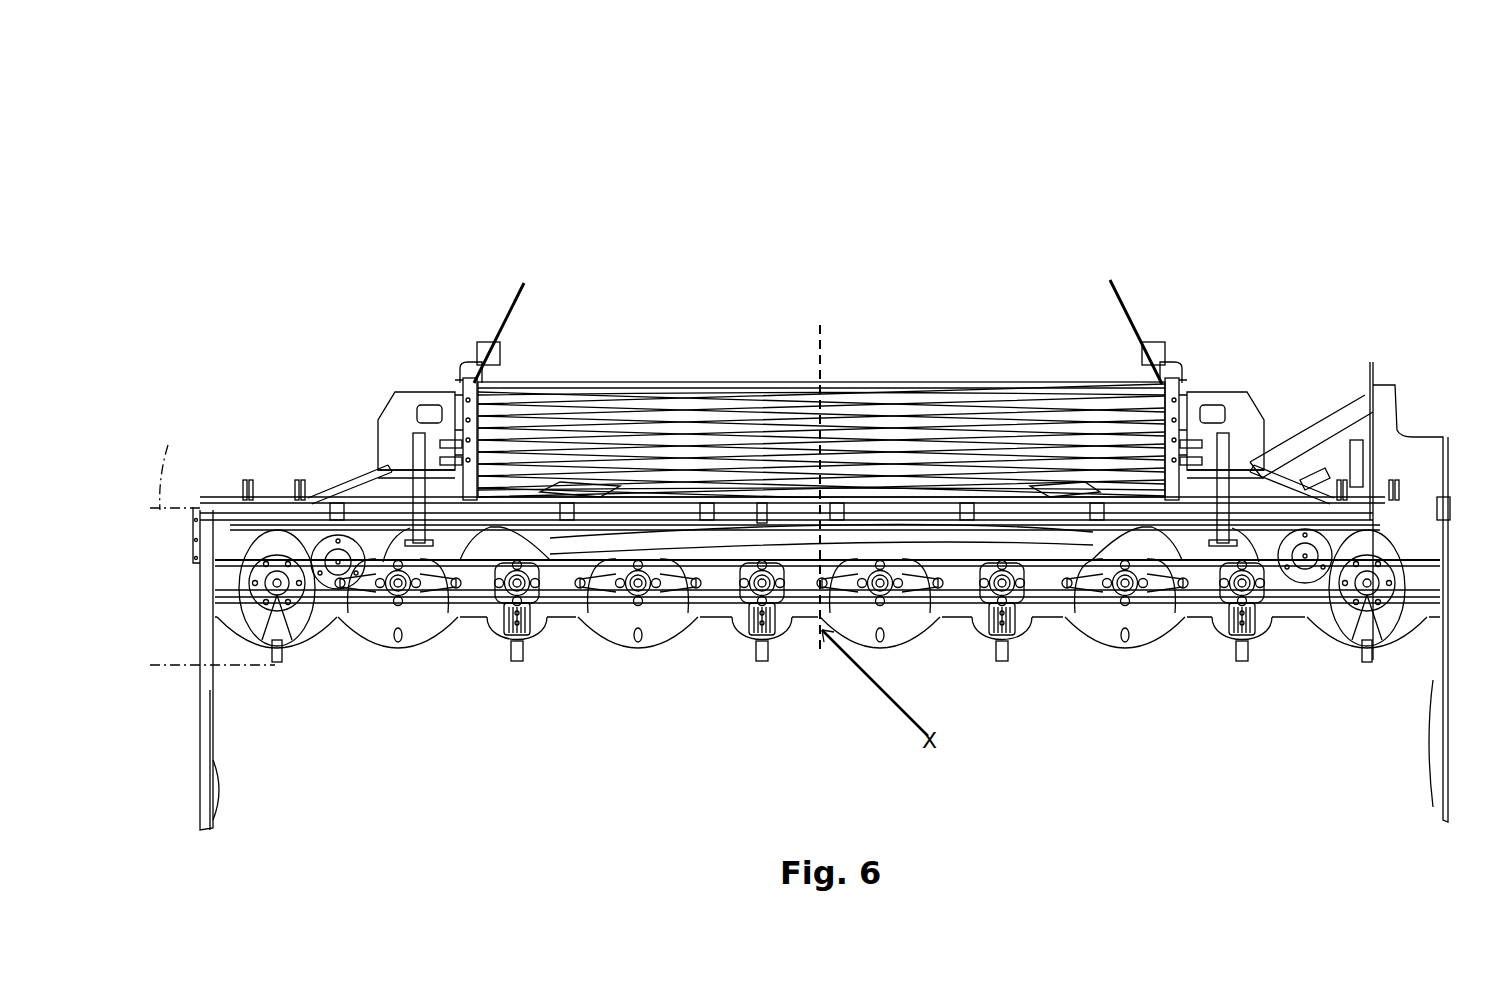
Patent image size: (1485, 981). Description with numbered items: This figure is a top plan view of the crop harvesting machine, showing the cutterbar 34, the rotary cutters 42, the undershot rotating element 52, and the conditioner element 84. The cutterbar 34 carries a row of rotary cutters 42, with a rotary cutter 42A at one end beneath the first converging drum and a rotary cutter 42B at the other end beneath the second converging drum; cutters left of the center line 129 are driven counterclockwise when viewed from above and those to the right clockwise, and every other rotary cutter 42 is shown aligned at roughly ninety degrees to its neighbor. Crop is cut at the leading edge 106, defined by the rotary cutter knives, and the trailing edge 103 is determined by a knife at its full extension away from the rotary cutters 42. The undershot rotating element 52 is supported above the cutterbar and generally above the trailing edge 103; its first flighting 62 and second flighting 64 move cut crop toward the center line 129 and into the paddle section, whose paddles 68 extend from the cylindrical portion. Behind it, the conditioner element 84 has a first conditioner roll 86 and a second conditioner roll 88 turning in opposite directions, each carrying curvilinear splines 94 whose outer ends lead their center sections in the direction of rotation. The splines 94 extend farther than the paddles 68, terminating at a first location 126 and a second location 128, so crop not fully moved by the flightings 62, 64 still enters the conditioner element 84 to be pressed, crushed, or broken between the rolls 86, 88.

The conditioner element 84 is at (969, 173).
The first conditioner roll 86 is at (742, 384).
The second conditioner roll 88 is at (962, 432).
The splines 94 is at (563, 390).
The first location 126 is at (476, 383).
The second location 128 is at (1180, 382).
The center axis 129 is at (832, 408).
The trailing edge 103 is at (183, 618).
The leading edge 106 is at (170, 668).
The cutterbar 34 is at (380, 633).
The rotary cutters 42 is at (663, 608).
The rotary cutter 42A is at (248, 613).
The rotary cutter 42B is at (1397, 603).
The undershot rotating element 52 is at (500, 545).
The first flighting 62 is at (563, 600).
The second flighting 64 is at (1100, 597).
The paddles 68 is at (1018, 540).